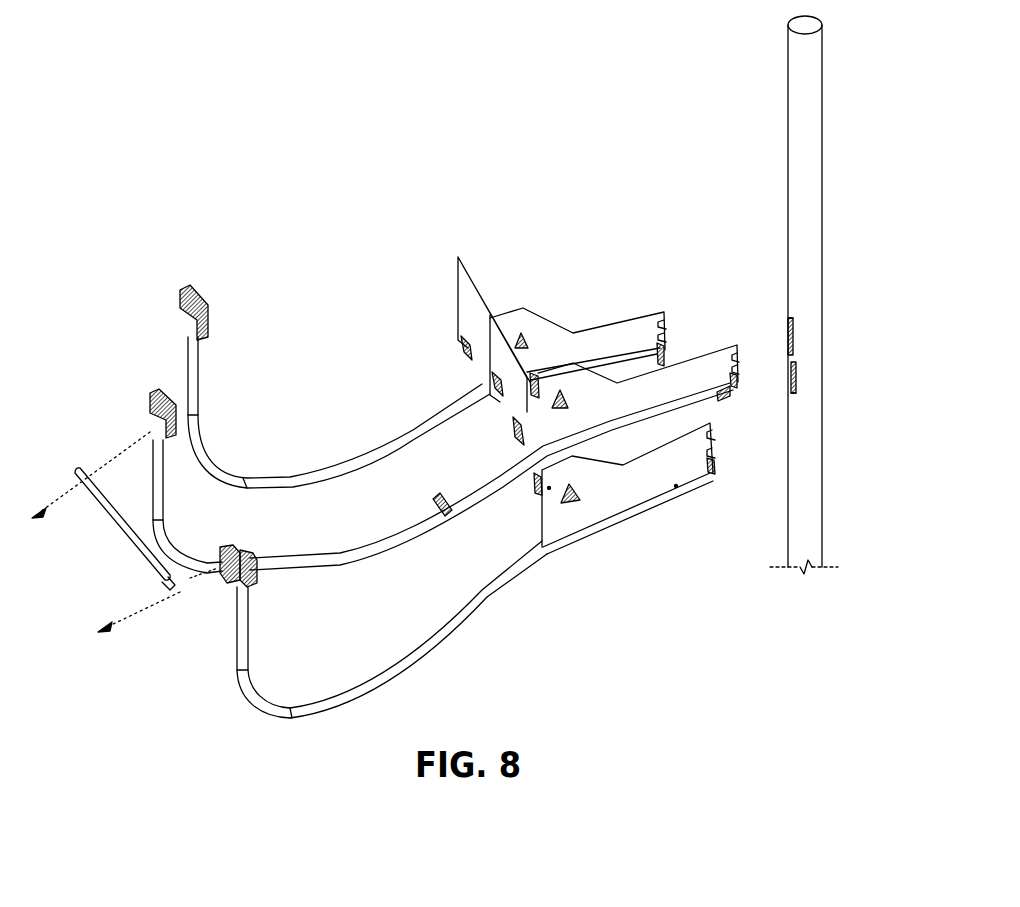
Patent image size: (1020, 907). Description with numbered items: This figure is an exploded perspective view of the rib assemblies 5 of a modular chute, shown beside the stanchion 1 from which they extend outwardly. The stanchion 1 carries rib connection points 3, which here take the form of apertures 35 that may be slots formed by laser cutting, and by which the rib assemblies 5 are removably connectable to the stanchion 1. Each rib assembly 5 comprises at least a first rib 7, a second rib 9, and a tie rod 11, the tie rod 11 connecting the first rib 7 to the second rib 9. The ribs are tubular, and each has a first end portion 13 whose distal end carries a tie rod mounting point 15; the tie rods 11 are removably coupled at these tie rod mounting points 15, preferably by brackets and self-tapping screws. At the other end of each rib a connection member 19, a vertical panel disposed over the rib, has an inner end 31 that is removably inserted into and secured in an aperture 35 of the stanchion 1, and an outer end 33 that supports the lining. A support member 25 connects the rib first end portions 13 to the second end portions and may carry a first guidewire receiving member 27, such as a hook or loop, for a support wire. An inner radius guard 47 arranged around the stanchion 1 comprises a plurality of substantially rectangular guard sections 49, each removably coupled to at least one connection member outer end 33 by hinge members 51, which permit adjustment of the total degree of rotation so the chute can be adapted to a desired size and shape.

The stanchion 1 is at (825, 277).
The rib connection points 3 is at (813, 323).
The rib assemblies 5 is at (170, 593).
The first rib 7 is at (421, 668).
The second rib 9 is at (342, 561).
The tie rod 11 is at (120, 537).
The first end portion 13 is at (177, 547).
The tie rod mounting points 15 is at (155, 393).
The connection member 19 is at (620, 498).
The support member 25 is at (228, 583).
The first guidewire receiving member 27 is at (437, 497).
The inner end 31 is at (739, 363).
The outer ends 33 is at (540, 513).
The apertures 35 is at (783, 292).
The inner radius guard 47 is at (460, 292).
The guard sections 49 is at (480, 352).
The hinge members 51 is at (533, 385).